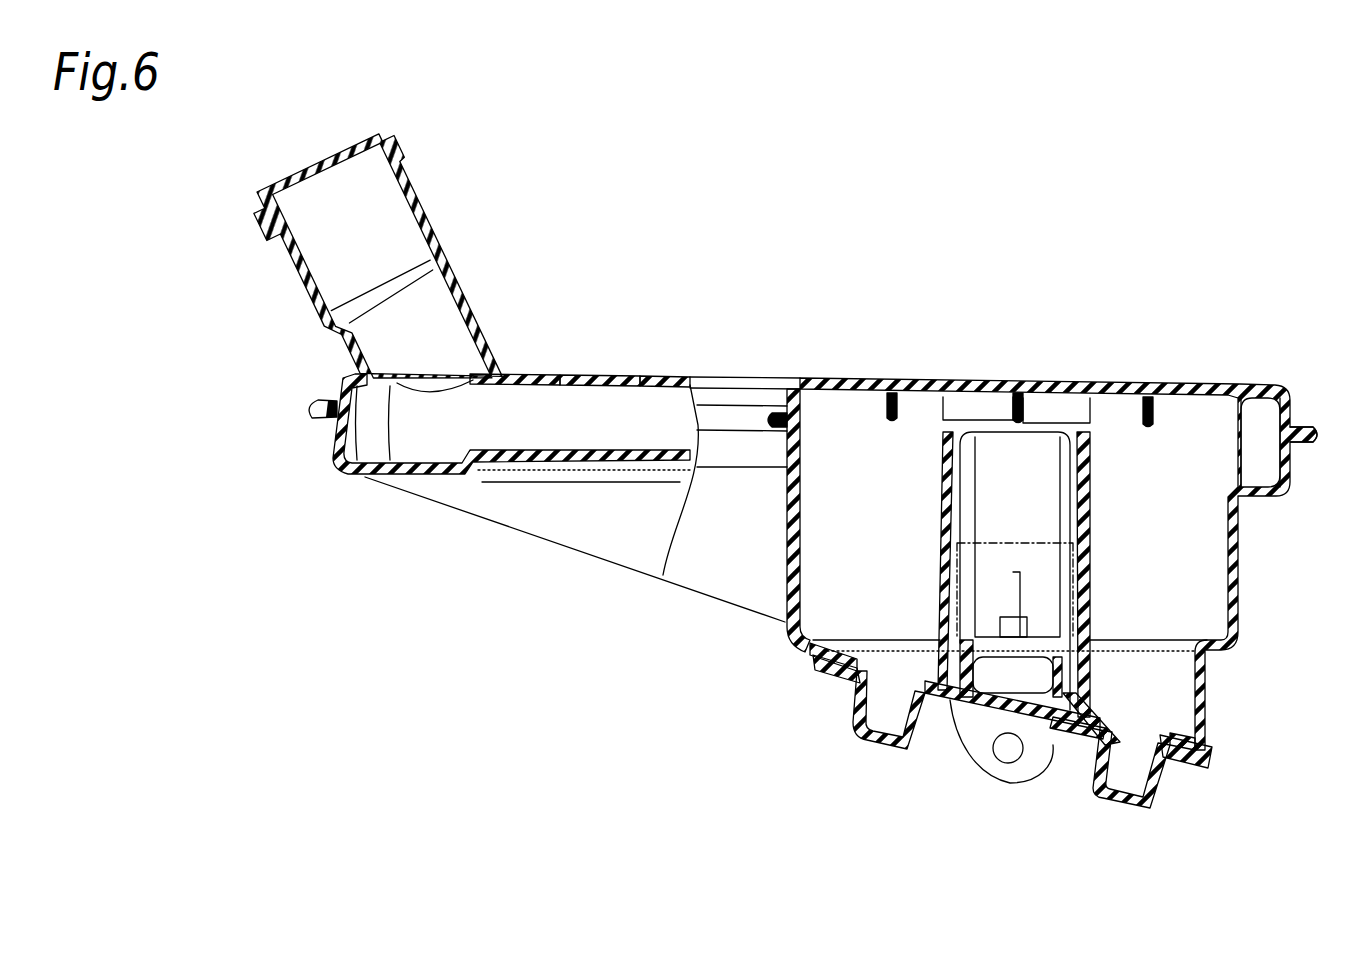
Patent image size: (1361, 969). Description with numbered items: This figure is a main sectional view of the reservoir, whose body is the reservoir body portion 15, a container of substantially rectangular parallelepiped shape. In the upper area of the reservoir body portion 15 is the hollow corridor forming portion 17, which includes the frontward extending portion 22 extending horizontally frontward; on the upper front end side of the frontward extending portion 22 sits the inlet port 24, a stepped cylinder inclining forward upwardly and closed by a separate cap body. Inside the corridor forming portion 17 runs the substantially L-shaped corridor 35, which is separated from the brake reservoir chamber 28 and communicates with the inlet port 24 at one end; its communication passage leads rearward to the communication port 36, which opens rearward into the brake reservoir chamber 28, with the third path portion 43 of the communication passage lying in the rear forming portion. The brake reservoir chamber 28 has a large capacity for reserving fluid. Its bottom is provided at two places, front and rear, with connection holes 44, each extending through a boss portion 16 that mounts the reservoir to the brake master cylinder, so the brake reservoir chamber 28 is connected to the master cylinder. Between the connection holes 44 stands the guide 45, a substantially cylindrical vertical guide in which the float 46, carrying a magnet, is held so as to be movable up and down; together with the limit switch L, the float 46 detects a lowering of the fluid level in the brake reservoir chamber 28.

The reservoir body portion 15 is at (1238, 525).
The boss portions 16 is at (843, 675).
The corridor forming portion 17 is at (660, 375).
The frontward extending portion 22 is at (583, 374).
The inlet port 24 is at (428, 212).
The brake reservoir chamber 28 is at (1200, 578).
The corridor 35 is at (558, 407).
The communication port 36 is at (1230, 432).
The third path portion 43 is at (1268, 460).
The connection holes 44 is at (875, 722).
The guide 45 is at (1093, 460).
The float 46 is at (1033, 543).
The limit switch L is at (1030, 680).